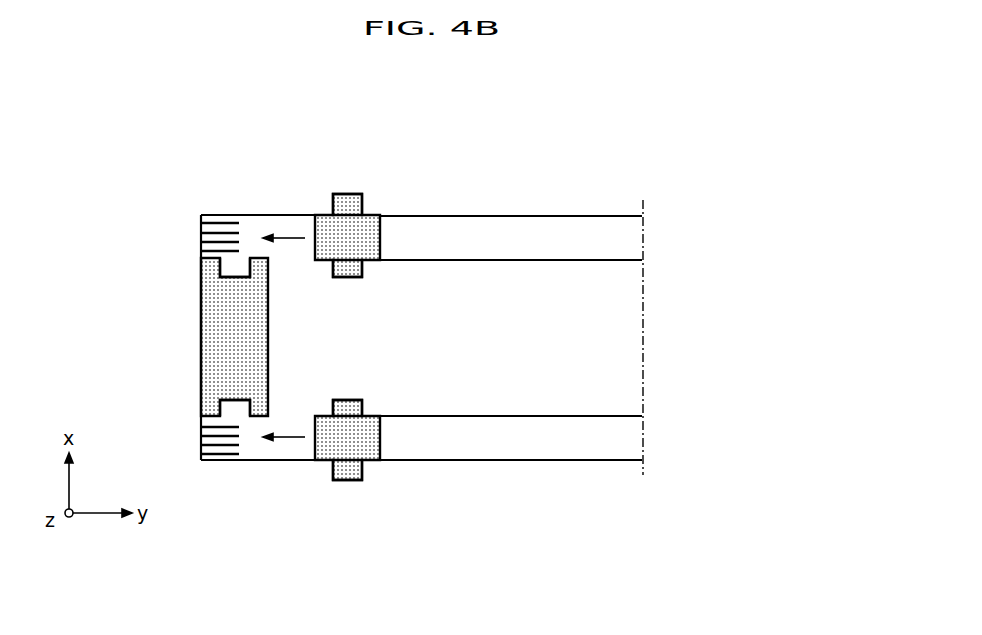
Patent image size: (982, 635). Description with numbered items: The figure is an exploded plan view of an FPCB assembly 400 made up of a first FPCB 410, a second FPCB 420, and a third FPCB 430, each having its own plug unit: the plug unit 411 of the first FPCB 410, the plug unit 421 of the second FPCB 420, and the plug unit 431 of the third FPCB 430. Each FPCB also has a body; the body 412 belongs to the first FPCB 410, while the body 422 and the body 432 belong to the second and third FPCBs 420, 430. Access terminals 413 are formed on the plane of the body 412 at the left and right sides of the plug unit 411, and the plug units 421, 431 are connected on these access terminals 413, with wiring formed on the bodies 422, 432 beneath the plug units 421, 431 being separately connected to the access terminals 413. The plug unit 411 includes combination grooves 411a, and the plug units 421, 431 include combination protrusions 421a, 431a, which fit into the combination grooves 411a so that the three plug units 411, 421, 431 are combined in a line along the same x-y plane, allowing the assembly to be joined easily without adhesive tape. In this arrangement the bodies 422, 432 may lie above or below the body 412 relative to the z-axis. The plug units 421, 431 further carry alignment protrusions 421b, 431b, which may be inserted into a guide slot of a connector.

The FPCB assembly 400 is at (615, 167).
The first FPCB 410 is at (650, 338).
The plug unit 411 is at (208, 342).
The combination grooves 411a is at (235, 267).
The body 412 is at (525, 338).
The access terminals 413 is at (200, 232).
The second FPCB 420 is at (650, 442).
The plug unit 421 is at (370, 448).
The combination protrusion 421a is at (358, 400).
The alignment protrusion 421b is at (347, 482).
The body 422 is at (543, 450).
The third FPCB 430 is at (650, 234).
The plug unit 431 is at (372, 220).
The combination protrusion 431a is at (357, 277).
The alignment protrusion 431b is at (348, 193).
The body 432 is at (543, 216).